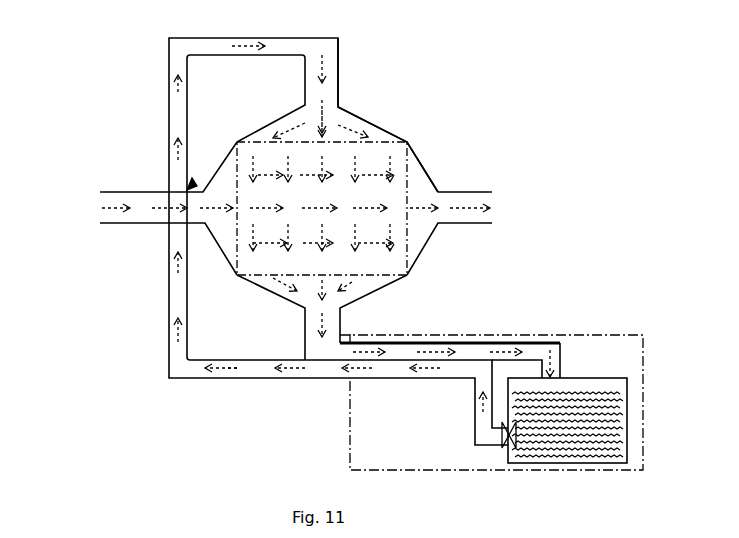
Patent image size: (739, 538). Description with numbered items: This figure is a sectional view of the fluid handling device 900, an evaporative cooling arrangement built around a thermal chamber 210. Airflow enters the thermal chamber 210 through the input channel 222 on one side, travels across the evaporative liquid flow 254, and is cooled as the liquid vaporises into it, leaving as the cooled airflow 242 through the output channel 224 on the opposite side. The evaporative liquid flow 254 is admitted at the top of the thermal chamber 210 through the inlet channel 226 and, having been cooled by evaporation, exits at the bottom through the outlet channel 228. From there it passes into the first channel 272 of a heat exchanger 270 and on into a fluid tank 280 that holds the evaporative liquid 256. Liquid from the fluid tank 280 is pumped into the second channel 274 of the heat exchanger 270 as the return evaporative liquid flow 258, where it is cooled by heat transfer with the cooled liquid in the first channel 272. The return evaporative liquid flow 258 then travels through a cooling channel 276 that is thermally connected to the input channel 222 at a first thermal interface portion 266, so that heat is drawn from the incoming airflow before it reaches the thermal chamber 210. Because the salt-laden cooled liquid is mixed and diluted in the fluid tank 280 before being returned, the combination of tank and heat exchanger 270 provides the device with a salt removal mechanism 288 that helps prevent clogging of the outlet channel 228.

The fluid handling device 900 is at (662, 43).
The inlet channel 226 is at (340, 98).
The evaporative liquid flow 254 is at (322, 68).
The thermal chamber 210 is at (400, 152).
The input channel 222 is at (122, 192).
The first thermal interface portion 266 is at (194, 180).
The cooled airflow 242 is at (470, 192).
The output channel 224 is at (475, 223).
The outlet channel 228 is at (350, 337).
The first channel 272 is at (418, 342).
The heat exchanger 270 is at (448, 343).
The salt removal mechanism 288 is at (542, 335).
The second channel 274 is at (397, 378).
The return evaporative liquid flow 258 is at (292, 367).
The cooling channel 276 is at (220, 367).
The fluid tank 280 is at (606, 378).
The evaporative liquid 256 is at (627, 428).